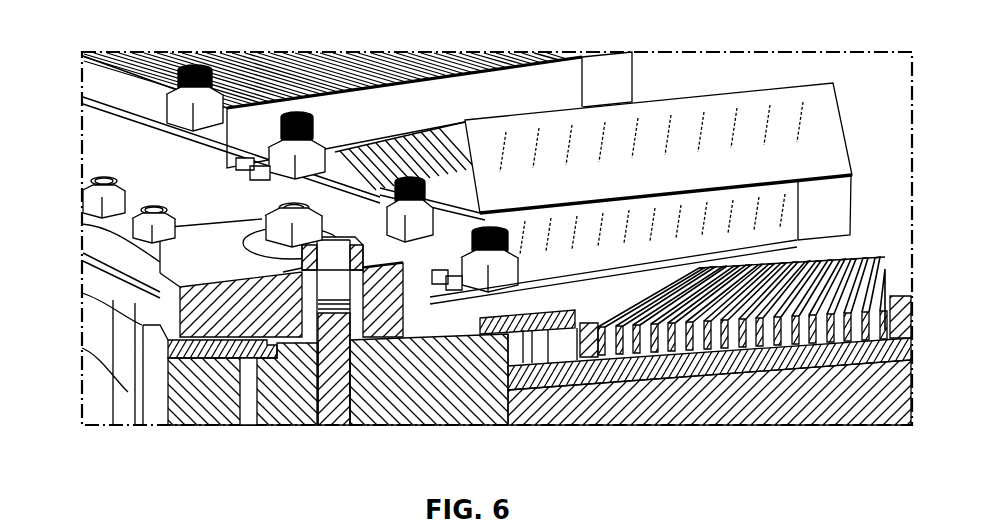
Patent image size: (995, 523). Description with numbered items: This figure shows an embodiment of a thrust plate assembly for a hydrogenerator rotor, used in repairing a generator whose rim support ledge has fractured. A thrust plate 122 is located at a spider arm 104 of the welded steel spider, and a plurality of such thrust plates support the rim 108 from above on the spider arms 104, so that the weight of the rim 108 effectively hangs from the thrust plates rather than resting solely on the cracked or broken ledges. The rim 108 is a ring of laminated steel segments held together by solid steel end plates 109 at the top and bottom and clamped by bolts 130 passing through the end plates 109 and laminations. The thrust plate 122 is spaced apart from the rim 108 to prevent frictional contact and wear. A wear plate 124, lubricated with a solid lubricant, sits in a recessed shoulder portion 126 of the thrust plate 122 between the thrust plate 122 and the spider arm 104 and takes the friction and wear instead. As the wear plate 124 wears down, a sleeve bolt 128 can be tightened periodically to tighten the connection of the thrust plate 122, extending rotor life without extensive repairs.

The spider arm 104 is at (82, 347).
The rim 108 is at (850, 268).
The end plate 109 is at (417, 310).
The thrust plate 122 is at (82, 225).
The wear plate 124 is at (83, 291).
The shoulder portion 126 is at (238, 384).
The sleeve bolt 128 is at (343, 272).
The bolt 130 is at (312, 385).